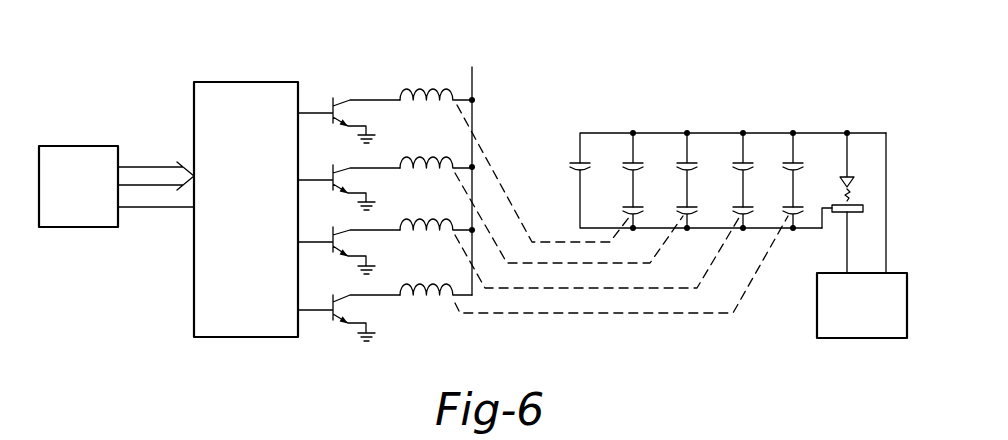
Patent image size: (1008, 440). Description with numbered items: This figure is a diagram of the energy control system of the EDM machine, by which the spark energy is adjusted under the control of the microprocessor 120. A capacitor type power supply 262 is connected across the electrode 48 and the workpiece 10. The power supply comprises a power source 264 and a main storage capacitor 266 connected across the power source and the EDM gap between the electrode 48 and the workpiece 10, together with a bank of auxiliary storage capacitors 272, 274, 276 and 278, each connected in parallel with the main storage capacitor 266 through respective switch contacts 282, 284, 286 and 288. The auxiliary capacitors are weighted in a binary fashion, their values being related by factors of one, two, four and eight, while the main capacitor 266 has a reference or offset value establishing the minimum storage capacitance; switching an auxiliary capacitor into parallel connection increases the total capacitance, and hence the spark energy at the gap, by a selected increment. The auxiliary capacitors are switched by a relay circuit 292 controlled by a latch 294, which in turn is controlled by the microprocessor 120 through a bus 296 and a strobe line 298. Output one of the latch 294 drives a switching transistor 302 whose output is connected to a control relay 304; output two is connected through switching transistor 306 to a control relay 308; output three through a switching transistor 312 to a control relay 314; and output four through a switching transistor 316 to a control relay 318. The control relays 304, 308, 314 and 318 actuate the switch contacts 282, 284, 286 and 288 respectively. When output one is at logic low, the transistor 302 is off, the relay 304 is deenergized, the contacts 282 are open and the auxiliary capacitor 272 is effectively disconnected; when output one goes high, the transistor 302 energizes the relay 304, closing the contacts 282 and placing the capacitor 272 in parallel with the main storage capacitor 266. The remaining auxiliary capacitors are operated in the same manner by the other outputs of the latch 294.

The workpiece 10 is at (850, 215).
The electrode 48 is at (853, 170).
The microprocessor 120 is at (67, 146).
The capacitor type power supply 262 is at (760, 52).
The power source 264 is at (817, 322).
The main storage capacitor 266 is at (585, 160).
The auxiliary storage capacitor 272 is at (640, 160).
The auxiliary storage capacitor 274 is at (695, 160).
The auxiliary storage capacitor 276 is at (750, 160).
The auxiliary storage capacitor 278 is at (800, 160).
The switch contacts 282 is at (637, 206).
The switch contacts 284 is at (691, 206).
The switch contacts 286 is at (746, 206).
The switch contacts 288 is at (796, 206).
The relay circuit 292 is at (384, 80).
The latch 294 is at (241, 78).
The bus 296 is at (153, 167).
The strobe line 298 is at (147, 207).
The switching transistor 302 is at (318, 102).
The control relay 304 is at (450, 70).
The switching transistor 306 is at (318, 172).
The control relay 308 is at (453, 140).
The switching transistor 312 is at (318, 240).
The control relay 314 is at (452, 207).
The switching transistor 316 is at (318, 306).
The control relay 318 is at (453, 272).